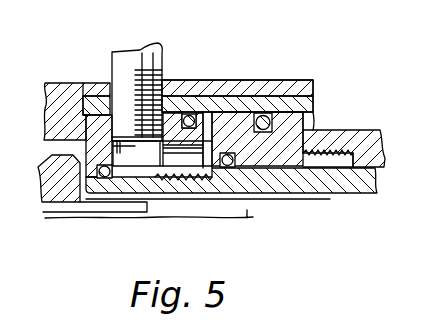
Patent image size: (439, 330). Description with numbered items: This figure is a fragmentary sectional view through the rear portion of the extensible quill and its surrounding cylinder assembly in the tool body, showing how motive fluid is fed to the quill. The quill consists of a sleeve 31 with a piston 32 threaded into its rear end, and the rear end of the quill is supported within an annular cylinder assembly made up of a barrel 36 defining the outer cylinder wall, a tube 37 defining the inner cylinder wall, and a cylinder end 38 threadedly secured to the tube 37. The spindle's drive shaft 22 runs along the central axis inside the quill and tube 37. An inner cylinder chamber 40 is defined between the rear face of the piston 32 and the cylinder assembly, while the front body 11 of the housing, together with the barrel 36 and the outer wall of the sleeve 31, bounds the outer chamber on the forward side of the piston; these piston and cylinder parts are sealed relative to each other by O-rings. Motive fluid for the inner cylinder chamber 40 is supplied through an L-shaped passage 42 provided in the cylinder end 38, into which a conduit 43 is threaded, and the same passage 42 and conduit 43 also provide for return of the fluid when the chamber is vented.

The front body 11 is at (62, 90).
The cylinder end 38 is at (100, 100).
The conduit 43 is at (155, 60).
The inner cylinder chamber 40 is at (208, 128).
The barrel 36 is at (302, 107).
The piston 32 is at (287, 127).
The sleeve 31 is at (377, 133).
The tube 37 is at (333, 180).
The drive shaft 22 is at (277, 196).
The L-shaped passage 42 is at (138, 160).